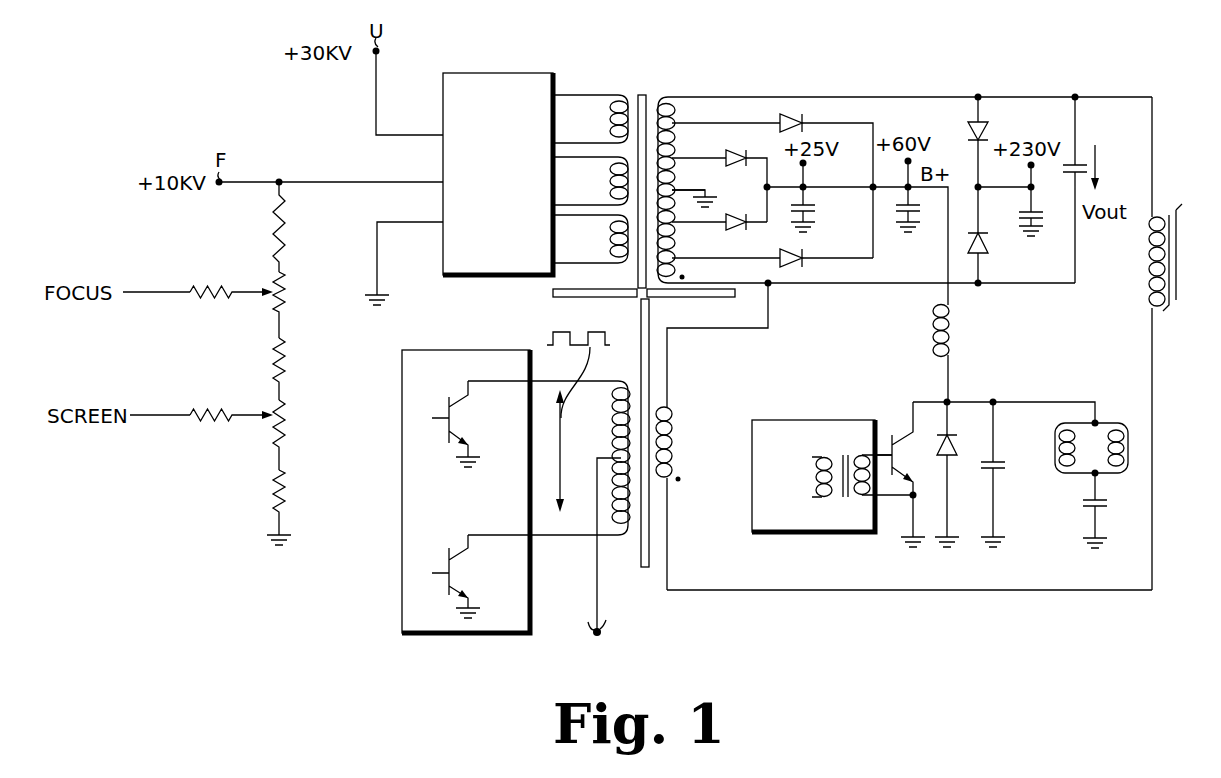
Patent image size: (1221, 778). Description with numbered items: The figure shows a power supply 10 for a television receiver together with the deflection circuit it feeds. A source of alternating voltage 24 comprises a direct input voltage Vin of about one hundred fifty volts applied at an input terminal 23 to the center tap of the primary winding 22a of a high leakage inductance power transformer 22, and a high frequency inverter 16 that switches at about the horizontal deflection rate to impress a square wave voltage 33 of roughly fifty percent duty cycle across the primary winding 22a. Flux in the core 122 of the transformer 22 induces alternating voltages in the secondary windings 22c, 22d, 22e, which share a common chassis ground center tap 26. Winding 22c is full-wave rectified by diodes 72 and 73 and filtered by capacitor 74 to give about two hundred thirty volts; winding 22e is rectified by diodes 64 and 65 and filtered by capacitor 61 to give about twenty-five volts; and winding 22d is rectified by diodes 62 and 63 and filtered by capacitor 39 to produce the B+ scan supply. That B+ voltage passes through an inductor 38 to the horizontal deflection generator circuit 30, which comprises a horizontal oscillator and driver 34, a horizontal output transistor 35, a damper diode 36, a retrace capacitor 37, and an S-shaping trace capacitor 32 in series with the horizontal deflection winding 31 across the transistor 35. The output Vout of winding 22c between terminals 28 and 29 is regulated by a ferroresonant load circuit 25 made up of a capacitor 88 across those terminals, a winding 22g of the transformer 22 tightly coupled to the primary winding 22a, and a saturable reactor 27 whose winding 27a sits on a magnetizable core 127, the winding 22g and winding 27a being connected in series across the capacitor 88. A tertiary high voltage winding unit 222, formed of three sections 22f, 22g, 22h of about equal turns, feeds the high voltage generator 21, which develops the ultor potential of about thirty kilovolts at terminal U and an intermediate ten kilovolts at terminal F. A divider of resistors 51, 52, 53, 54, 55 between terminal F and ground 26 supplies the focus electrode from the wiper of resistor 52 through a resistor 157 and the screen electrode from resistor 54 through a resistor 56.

The power supply 10 is at (821, 41).
The high frequency inverter 16 is at (478, 350).
The high voltage generator 21 is at (472, 278).
The high leakage inductance power transformer 22 is at (712, 325).
The primary winding 22a is at (614, 446).
The secondary output winding 22c is at (675, 115).
The secondary output winding 22d is at (671, 148).
The secondary output winding 22e is at (670, 183).
The high voltage winding section 22f is at (608, 243).
The winding 22g is at (609, 187).
The high voltage winding section 22h is at (609, 125).
The input terminal 23 is at (600, 638).
The source of alternating voltage 24 is at (440, 476).
The ferroresonant load circuit 25 is at (1134, 309).
The chassis ground center tap 26 is at (293, 541).
The deflection yoke 27 is at (1187, 194).
The saturable reactor winding 27a is at (1150, 263).
The terminal 28 is at (980, 94).
The terminal 29 is at (981, 287).
The horizontal deflection generator circuit 30 is at (877, 396).
The horizontal deflection winding 31 is at (1050, 441).
The S-shaping or trace capacitor 32 is at (1084, 509).
The square or rectangular wave voltage 33 is at (548, 340).
The horizontal oscillator and driver 34 is at (845, 534).
The horizontal output transistor 35 is at (896, 454).
The damper diode 36 is at (954, 442).
The retrace capacitor 37 is at (996, 468).
The inductor 38 is at (957, 339).
The capacitor 39 is at (922, 218).
The resistor 51 is at (285, 226).
The resistor 52 is at (286, 301).
The resistor 53 is at (286, 358).
The resistor 54 is at (289, 422).
The resistor 55 is at (291, 488).
The resistor 56 is at (218, 410).
The capacitor 61 is at (815, 200).
The diode 62 is at (805, 120).
The diode 63 is at (805, 268).
The diode 64 is at (744, 156).
The diode 65 is at (737, 232).
The diode 72 is at (988, 128).
The diode 73 is at (986, 250).
The capacitor 74 is at (1043, 218).
The capacitor 88 is at (1032, 190).
The core 122 is at (640, 318).
The magnetizable core 127 is at (1178, 260).
The resistor 157 is at (220, 286).
The tertiary or high voltage secondary winding unit 222 is at (591, 161).